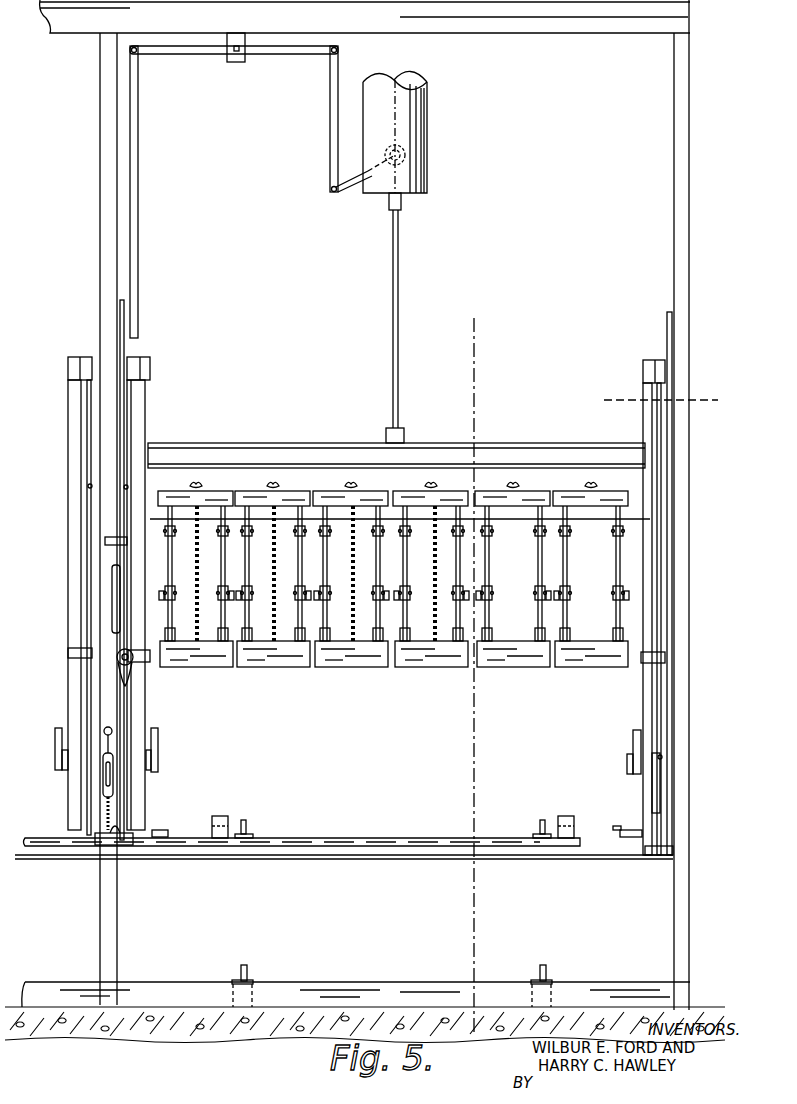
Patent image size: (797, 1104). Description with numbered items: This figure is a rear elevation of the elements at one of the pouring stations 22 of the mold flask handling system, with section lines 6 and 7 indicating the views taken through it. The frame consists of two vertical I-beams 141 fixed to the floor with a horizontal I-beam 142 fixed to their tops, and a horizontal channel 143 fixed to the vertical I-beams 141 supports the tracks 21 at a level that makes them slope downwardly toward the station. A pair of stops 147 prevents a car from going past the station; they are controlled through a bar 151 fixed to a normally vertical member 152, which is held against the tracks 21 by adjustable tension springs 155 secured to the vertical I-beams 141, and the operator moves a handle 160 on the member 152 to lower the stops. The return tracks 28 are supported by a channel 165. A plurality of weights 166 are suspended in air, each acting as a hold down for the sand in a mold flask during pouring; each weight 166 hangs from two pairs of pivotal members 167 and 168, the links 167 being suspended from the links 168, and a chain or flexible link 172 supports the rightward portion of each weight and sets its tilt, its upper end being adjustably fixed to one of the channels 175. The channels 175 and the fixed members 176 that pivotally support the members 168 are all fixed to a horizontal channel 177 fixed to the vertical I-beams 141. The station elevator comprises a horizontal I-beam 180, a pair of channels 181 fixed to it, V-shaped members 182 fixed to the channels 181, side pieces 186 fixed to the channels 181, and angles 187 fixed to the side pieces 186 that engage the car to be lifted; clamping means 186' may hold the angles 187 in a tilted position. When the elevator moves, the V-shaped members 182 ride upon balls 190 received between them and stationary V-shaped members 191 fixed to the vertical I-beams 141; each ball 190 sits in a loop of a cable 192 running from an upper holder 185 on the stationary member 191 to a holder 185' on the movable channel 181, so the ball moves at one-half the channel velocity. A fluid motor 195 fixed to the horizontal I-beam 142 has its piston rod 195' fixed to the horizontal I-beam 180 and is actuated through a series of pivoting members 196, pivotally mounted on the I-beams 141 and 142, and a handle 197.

The tracks 21 is at (248, 826).
The pouring station 22 is at (707, 204).
The return tracks 28 is at (246, 970).
The vertical I-beams 141 is at (110, 958).
The horizontal I-beam 142 is at (508, 32).
The horizontal channel 143 is at (364, 852).
The stops 147 is at (220, 814).
The bar 151 is at (281, 844).
The normally vertical member 152 is at (128, 846).
The adjustable tension springs 155 is at (104, 848).
The handle 160 is at (110, 596).
The channel 165 is at (370, 980).
The weights 166 is at (260, 660).
The pivotal members 167 is at (218, 610).
The pivotal members 168 is at (218, 564).
The chain or flexible link 172 is at (276, 578).
The channels 175 is at (262, 500).
The fixed members 176 is at (218, 514).
The horizontal channel 177 is at (160, 497).
The horizontal I-beam 180 is at (433, 458).
The channels 181 is at (140, 394).
The V-shaped members 182 is at (130, 421).
The upper holder 185 is at (366, 675).
The holder 185' is at (396, 344).
The side pieces 186 is at (392, 765).
The clamping means 186' is at (389, 749).
The angles 187 is at (165, 830).
The balls 190 is at (126, 464).
The V-shaped members 191 is at (126, 326).
The ropes or cables 192 is at (132, 674).
The fluid motor 195 is at (423, 132).
The piston rod 195' is at (424, 318).
The pivoting members 196 is at (265, 50).
The handle 197 is at (103, 540).
The section line 6- 6 is at (452, 312).
The section line 7- 7 is at (604, 418).